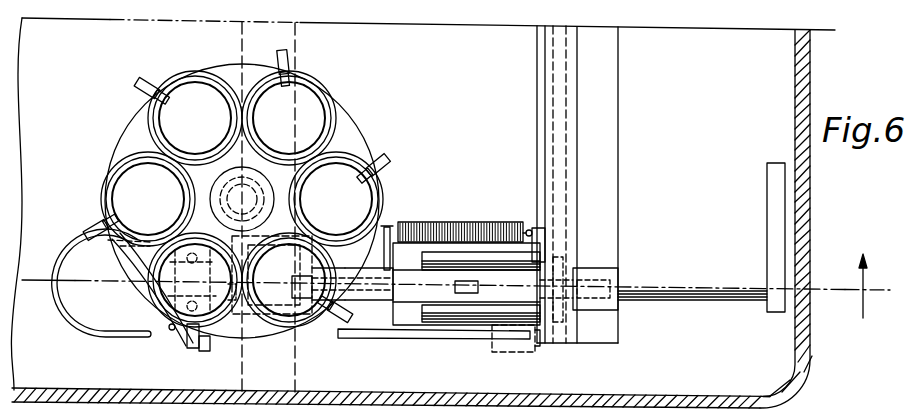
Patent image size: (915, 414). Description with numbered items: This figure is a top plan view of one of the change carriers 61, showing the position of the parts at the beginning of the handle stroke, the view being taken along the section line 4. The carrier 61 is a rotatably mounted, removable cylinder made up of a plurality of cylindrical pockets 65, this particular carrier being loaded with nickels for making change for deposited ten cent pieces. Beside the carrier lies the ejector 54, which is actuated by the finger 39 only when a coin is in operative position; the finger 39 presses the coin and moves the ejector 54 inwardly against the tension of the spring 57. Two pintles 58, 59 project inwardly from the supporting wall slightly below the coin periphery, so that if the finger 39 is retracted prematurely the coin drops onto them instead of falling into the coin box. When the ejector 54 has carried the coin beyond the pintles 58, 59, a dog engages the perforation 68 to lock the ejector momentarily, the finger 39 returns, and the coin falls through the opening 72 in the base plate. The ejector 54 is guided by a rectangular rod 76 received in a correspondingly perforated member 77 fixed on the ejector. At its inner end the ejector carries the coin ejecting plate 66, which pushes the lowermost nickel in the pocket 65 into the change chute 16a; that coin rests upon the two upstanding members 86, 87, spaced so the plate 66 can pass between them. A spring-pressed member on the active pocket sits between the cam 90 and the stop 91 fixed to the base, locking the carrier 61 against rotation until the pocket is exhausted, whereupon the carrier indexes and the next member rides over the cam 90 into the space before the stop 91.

The section line 4- 4 is at (456, 286).
The change chute 16a is at (101, 283).
The finger 39 is at (776, 214).
The ejector 54 is at (400, 282).
The spring 57 is at (459, 224).
The pintle 58 is at (462, 263).
The pintle 59 is at (466, 312).
The change carrier 61 is at (356, 128).
The pocket 65 is at (110, 173).
The coin ejecting plate 66 is at (318, 322).
The perforation 68 is at (478, 288).
The opening 72 is at (410, 316).
The rectangular rod 76 is at (364, 336).
The member 77 is at (514, 350).
The member 86 is at (224, 292).
The member 87 is at (192, 280).
The cam 90 is at (148, 314).
The stop 91 is at (210, 351).